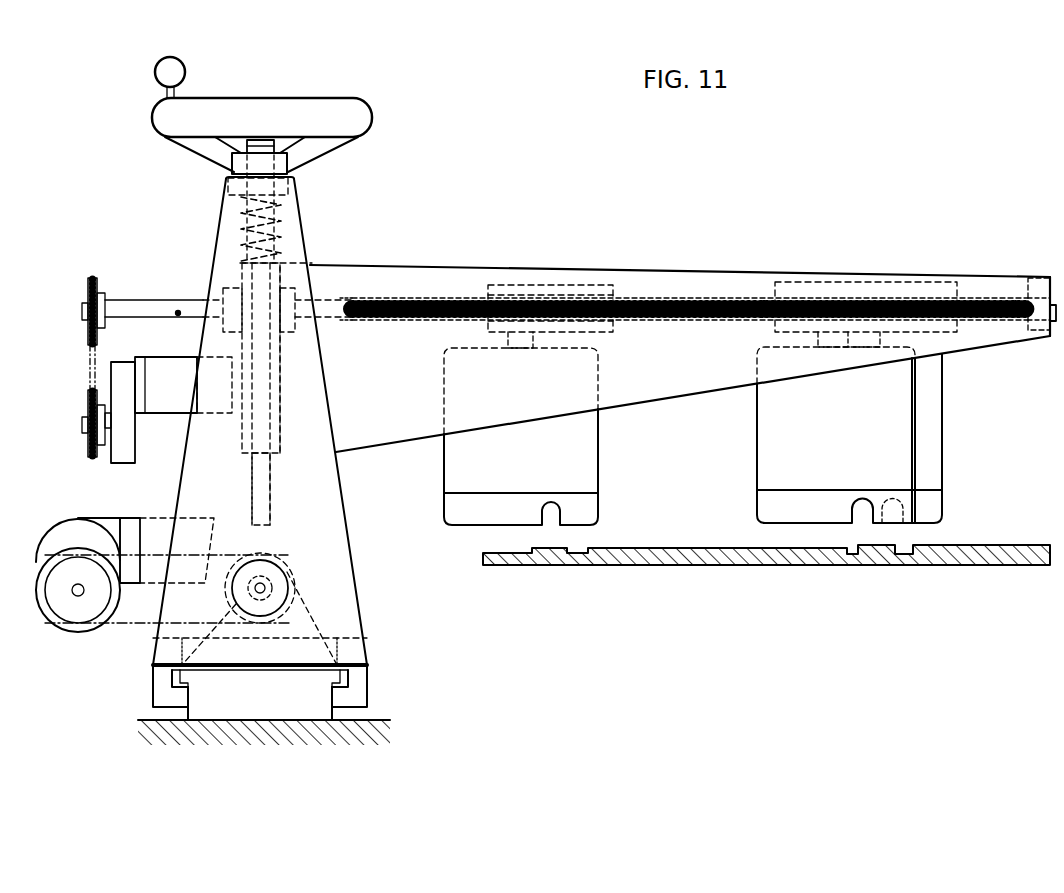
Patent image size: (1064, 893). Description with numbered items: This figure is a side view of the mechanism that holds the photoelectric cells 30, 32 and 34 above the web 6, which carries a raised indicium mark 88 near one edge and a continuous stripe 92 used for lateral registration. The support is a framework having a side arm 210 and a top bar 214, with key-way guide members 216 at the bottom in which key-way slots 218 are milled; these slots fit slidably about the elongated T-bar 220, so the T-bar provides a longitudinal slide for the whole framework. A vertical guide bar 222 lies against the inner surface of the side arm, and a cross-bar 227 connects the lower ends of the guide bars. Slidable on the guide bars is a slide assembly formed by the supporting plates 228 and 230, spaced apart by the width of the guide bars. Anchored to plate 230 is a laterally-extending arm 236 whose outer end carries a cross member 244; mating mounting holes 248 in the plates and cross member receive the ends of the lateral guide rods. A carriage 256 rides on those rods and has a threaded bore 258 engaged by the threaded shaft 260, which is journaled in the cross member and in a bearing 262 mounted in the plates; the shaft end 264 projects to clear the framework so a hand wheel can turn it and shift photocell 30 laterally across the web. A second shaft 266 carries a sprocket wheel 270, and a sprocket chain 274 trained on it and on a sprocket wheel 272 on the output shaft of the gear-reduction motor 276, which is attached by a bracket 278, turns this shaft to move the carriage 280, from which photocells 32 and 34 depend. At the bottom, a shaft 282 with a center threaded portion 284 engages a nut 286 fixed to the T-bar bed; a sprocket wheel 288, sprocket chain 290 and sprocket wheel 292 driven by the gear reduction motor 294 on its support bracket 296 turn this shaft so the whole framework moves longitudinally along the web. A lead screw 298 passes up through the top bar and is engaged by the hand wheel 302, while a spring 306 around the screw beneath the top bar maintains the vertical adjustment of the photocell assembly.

The web 6 is at (702, 548).
The photoelectric cell 30 is at (590, 478).
The photoelectric cell 32 is at (760, 476).
The photoelectric cell 34 is at (930, 477).
The raised indicium mark 88 is at (545, 548).
The continuous stripe 92 is at (878, 546).
The side arm 210 is at (304, 250).
The top bar 214 is at (290, 203).
The key-way guide member 216 is at (153, 700).
The key-way slot 218 is at (176, 682).
The T-bar 220 is at (282, 709).
The guide bar 222 is at (263, 404).
The cross-bar 227 is at (270, 515).
The slidable supporting plate 228 is at (242, 445).
The slidable supporting plate 230 is at (280, 445).
The laterally-extending arm 236 is at (760, 257).
The cross member 244 is at (1028, 280).
The mounting hole 248 is at (1054, 330).
The carriage 256 is at (518, 283).
The threaded bore 258 is at (574, 283).
The threaded shaft 260 is at (690, 298).
The bearing 262 is at (296, 292).
The shaft end 264 is at (178, 310).
The shaft 266 is at (120, 318).
The sprocket wheel 270 is at (87, 292).
The sprocket wheel 272 is at (86, 411).
The sprocket chain 274 is at (86, 367).
The gear-reduction motor 276 is at (180, 406).
The bracket 278 is at (200, 386).
The carriage 280 is at (840, 282).
The shaft 282 is at (280, 578).
The threaded portion 284 is at (268, 589).
The nut 286 is at (300, 618).
The sprocket wheel 288 is at (222, 617).
The sprocket chain 290 is at (236, 562).
The sprocket wheel 292 is at (110, 630).
The gear reduction motor 294 is at (62, 538).
The support bracket 296 is at (156, 520).
The lead screw 298 is at (288, 150).
The hand wheel 302 is at (360, 119).
The spring 306 is at (283, 232).